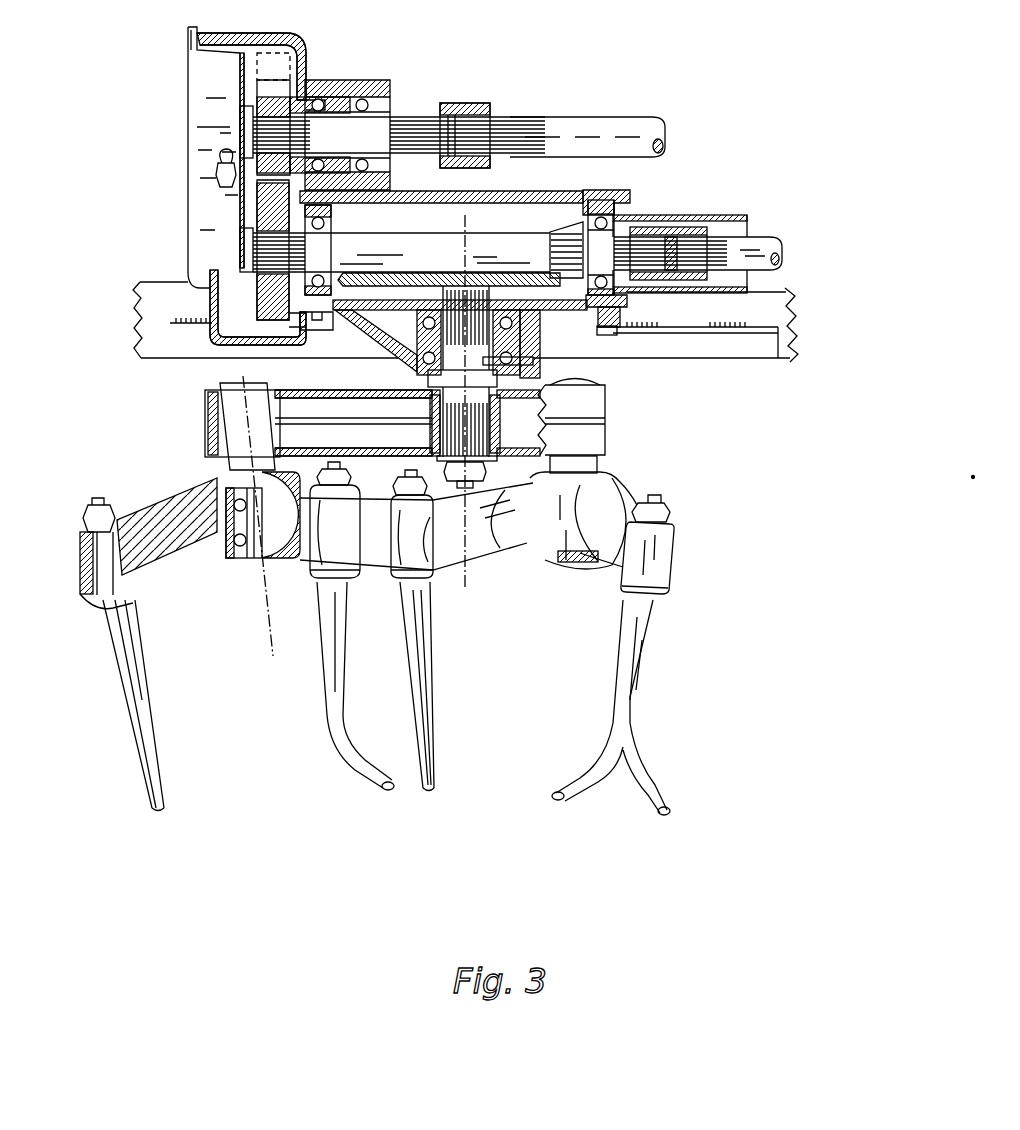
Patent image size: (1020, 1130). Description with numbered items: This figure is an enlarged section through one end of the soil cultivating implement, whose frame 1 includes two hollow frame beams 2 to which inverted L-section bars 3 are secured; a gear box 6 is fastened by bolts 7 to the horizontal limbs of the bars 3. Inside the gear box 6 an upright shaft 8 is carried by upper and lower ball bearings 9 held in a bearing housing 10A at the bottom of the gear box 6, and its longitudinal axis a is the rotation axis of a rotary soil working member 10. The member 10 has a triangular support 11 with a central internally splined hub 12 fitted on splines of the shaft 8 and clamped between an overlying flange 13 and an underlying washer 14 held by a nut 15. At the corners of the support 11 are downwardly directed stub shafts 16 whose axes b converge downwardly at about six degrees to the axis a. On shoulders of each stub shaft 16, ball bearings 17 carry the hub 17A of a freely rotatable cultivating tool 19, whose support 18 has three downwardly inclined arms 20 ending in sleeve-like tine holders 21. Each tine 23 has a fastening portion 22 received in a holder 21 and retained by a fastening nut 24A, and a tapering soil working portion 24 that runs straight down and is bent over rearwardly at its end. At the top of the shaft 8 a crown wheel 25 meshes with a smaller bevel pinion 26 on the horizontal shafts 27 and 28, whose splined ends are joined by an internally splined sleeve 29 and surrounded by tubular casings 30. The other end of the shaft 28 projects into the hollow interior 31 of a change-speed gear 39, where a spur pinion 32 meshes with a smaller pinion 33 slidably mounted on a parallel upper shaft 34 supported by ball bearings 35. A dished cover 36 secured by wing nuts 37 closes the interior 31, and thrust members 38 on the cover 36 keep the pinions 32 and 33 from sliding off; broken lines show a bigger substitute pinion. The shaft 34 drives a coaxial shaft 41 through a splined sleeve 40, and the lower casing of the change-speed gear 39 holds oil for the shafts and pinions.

The frame 1 is at (471, 326).
The frame beams 2 is at (786, 291).
The bars 3 is at (186, 350).
The gear box 6 is at (520, 191).
The bolts 7 is at (334, 333).
The shaft 8 is at (571, 417).
The ball bearings 9 is at (422, 360).
The rotary soil working member 10 is at (357, 609).
The bearing housing 10A is at (533, 363).
The support 11 is at (206, 416).
The hub 12 is at (435, 431).
The flange 13 is at (435, 408).
The washer 14 is at (437, 459).
The nut 15 is at (487, 473).
The stub shafts 16 is at (258, 385).
The ball bearings 17 is at (222, 550).
The hub 17A is at (262, 557).
The support 18 is at (174, 496).
The cultivating tool 19 is at (238, 706).
The arms 20 is at (622, 505).
The tine holders 21 is at (352, 521).
The fastening portion 22 is at (97, 572).
The soil working tines 23 is at (401, 697).
The soil working portion 24 is at (160, 766).
The fastening nut 24A is at (104, 504).
The crown wheel or bevel pinion 25 is at (432, 272).
The bevel pinion 26 is at (592, 200).
The shaft 27 is at (765, 240).
The shaft 28 is at (485, 235).
The sleeve 29 is at (652, 226).
The tubular casings 30 is at (728, 220).
The hollow interior 31 is at (270, 46).
The pinion 32 is at (262, 322).
The pinion 33 is at (285, 90).
The shaft 34 is at (398, 122).
The ball bearings 35 is at (362, 98).
The cover 36 is at (198, 136).
The wing nuts 37 is at (216, 172).
The thrust members 38 is at (240, 111).
The change-speed gear 39 is at (240, 174).
The sleeve 40 is at (471, 104).
The shaft 41 is at (597, 117).
The longitudinal axis a is at (475, 578).
The longitudinal axes b is at (276, 645).